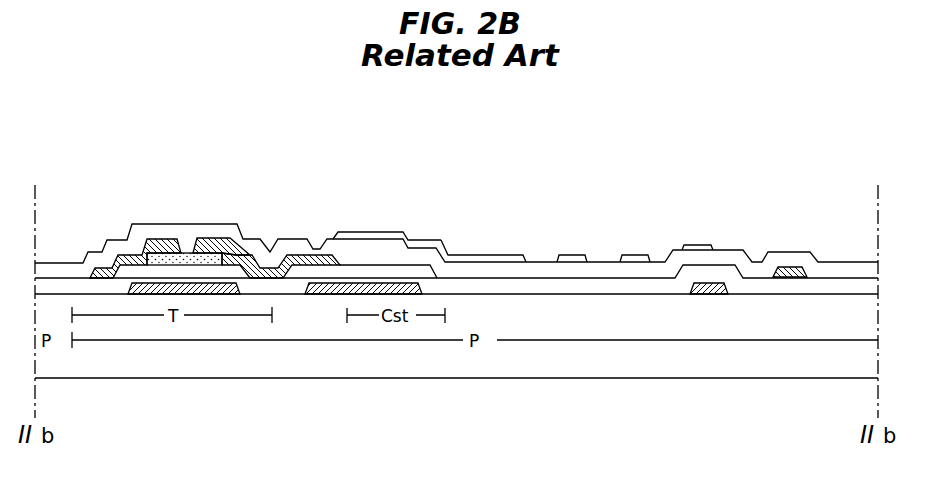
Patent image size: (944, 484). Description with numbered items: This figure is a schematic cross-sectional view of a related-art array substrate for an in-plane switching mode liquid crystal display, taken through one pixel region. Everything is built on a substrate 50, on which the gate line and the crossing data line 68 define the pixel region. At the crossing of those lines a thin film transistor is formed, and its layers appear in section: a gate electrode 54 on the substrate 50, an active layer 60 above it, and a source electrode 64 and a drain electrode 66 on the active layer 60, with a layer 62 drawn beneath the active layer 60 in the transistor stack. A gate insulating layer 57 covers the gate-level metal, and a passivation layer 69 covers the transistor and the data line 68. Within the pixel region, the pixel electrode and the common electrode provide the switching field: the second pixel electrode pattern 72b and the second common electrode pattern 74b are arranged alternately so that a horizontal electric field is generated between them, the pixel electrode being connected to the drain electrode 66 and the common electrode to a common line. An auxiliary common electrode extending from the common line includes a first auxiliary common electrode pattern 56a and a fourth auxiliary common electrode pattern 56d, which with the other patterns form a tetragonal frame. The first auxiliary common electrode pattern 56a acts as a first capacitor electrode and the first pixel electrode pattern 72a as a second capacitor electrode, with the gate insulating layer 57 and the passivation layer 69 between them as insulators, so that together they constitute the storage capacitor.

The substrate 50 is at (861, 367).
The gate electrode 54 is at (140, 296).
The first auxiliary common electrode pattern 56a is at (323, 296).
The fourth auxiliary common electrode pattern 56d is at (708, 296).
The gate insulating layer 57 is at (421, 266).
The active layer 60 is at (210, 252).
The active layer 62 is at (163, 242).
The source electrode 64 is at (123, 257).
The drain electrode 66 is at (252, 256).
The data line 68 is at (792, 266).
The passivation layer 69 is at (472, 270).
The first pixel electrode pattern 72a is at (365, 231).
The second pixel electrode pattern 72b is at (515, 254).
The second common electrode pattern 74b is at (574, 254).